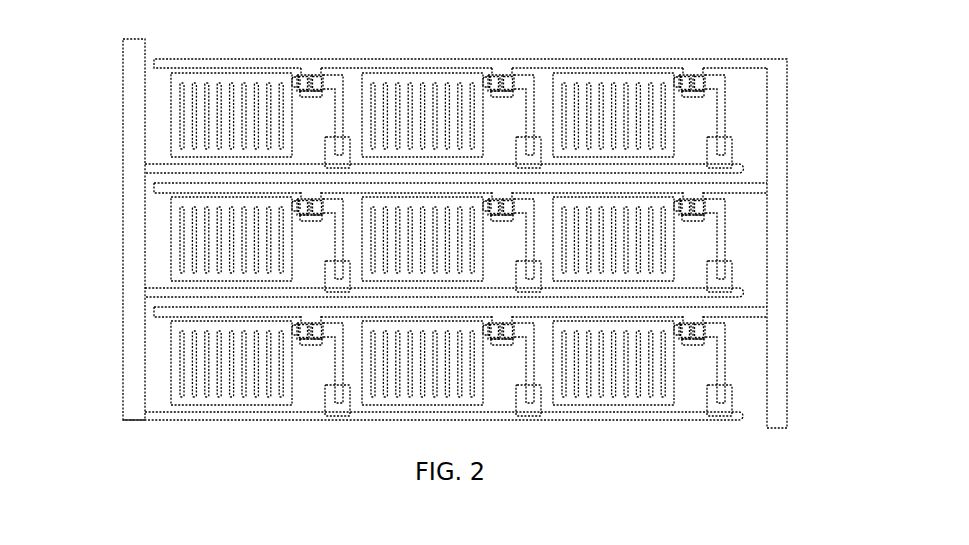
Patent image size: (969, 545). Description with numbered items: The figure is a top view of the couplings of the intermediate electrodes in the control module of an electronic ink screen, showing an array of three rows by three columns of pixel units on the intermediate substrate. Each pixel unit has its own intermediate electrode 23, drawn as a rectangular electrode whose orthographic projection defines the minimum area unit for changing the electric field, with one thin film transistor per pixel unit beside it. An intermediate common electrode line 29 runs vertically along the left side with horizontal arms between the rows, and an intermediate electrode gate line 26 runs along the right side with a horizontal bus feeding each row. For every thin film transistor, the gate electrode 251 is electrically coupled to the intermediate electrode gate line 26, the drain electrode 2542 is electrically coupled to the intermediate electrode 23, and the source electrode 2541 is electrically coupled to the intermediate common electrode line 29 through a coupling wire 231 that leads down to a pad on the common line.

The intermediate common electrode line 29 is at (128, 100).
The intermediate electrode 23 is at (177, 110).
The intermediate electrode gate line 26 is at (773, 72).
The drain electrode 2542 is at (678, 74).
The gate electrode 251 is at (702, 71).
The source electrode 2541 is at (720, 92).
The coupling wire 231 is at (732, 148).